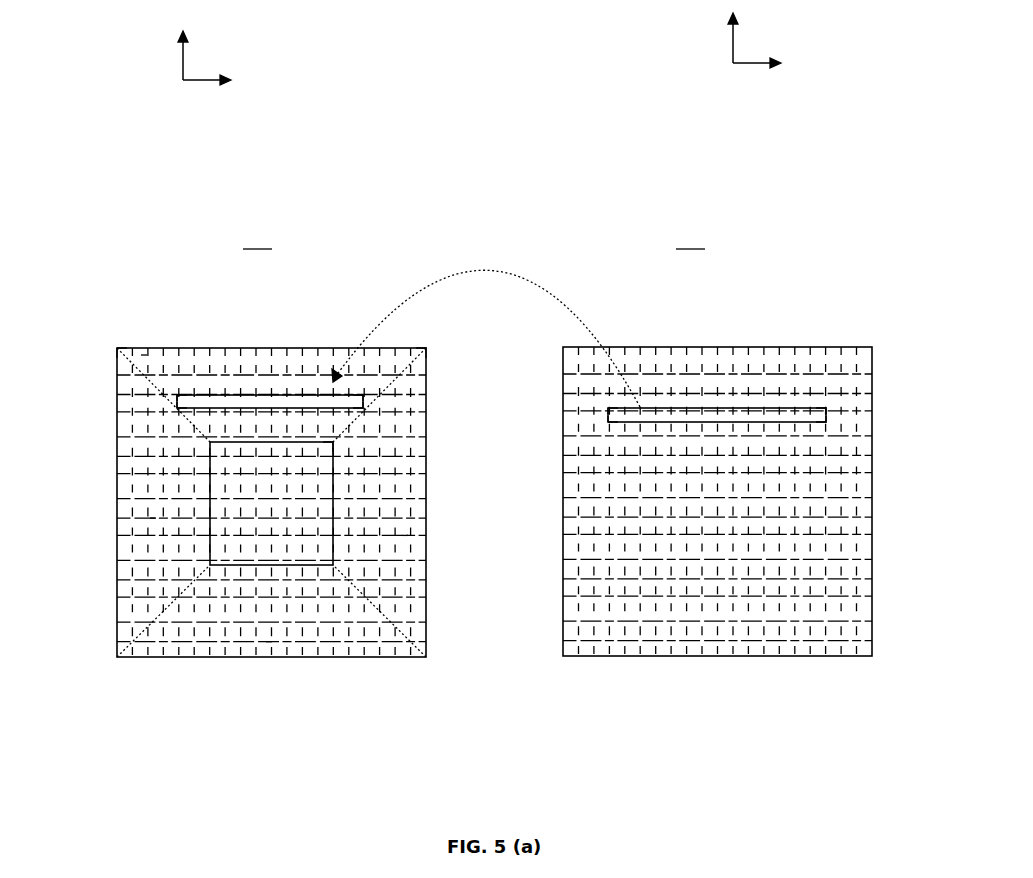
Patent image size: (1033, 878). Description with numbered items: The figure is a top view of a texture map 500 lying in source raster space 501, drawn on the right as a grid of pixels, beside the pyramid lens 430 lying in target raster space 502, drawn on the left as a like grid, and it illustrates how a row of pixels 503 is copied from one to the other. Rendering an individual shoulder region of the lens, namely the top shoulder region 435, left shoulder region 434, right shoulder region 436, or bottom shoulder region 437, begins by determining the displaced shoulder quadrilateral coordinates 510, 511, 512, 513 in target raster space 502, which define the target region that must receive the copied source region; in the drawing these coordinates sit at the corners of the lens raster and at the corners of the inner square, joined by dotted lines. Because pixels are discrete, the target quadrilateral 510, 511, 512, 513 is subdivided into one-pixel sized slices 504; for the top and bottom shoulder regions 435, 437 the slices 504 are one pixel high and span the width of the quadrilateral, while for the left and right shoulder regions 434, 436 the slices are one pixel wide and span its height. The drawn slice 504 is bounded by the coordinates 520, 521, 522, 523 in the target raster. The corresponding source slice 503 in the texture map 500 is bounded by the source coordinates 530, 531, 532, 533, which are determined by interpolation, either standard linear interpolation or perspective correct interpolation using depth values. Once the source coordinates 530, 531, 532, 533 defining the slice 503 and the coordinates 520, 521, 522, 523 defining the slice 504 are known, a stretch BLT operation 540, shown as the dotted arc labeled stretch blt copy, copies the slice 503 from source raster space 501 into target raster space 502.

The pyramid lens 430 is at (153, 625).
The left shoulder region 434 is at (152, 517).
The top shoulder region 435 is at (145, 360).
The right shoulder region 436 is at (405, 530).
The bottom shoulder region 437 is at (268, 637).
The texture map 500 is at (713, 637).
The source raster space 501 is at (718, 492).
The target raster space 502 is at (262, 509).
The row of pixels (source slice) 503 is at (727, 418).
The slice 504 is at (258, 405).
The displaced shoulder quadrilateral coordinate 510 is at (117, 348).
The displaced shoulder quadrilateral coordinate 511 is at (208, 442).
The displaced shoulder quadrilateral coordinate 512 is at (333, 442).
The displaced shoulder quadrilateral coordinate 513 is at (426, 348).
The target slice coordinate 520 is at (177, 395).
The target slice coordinate 521 is at (177, 408).
The target slice coordinate 522 is at (363, 408).
The target slice coordinate 523 is at (363, 395).
The source slice coordinate 530 is at (607, 407).
The source slice coordinate 531 is at (607, 422).
The source slice coordinate 532 is at (826, 422).
The source slice coordinate 533 is at (826, 408).
The stretch BLT operation 540 is at (480, 235).